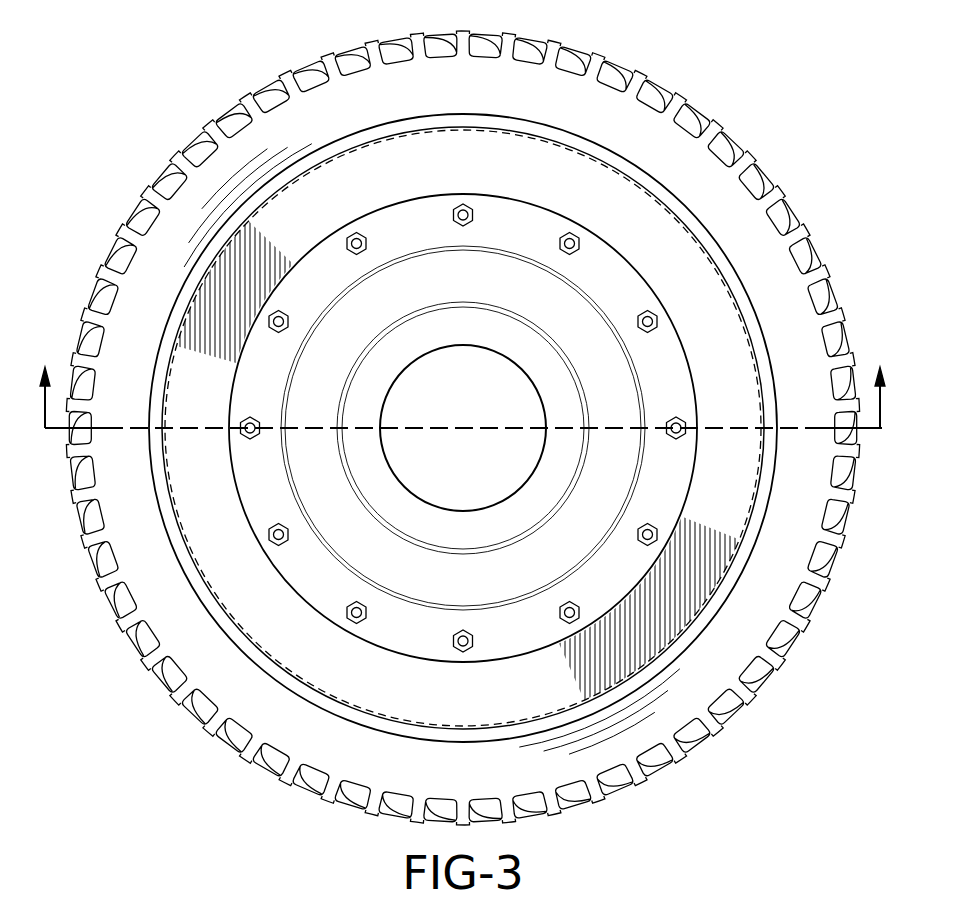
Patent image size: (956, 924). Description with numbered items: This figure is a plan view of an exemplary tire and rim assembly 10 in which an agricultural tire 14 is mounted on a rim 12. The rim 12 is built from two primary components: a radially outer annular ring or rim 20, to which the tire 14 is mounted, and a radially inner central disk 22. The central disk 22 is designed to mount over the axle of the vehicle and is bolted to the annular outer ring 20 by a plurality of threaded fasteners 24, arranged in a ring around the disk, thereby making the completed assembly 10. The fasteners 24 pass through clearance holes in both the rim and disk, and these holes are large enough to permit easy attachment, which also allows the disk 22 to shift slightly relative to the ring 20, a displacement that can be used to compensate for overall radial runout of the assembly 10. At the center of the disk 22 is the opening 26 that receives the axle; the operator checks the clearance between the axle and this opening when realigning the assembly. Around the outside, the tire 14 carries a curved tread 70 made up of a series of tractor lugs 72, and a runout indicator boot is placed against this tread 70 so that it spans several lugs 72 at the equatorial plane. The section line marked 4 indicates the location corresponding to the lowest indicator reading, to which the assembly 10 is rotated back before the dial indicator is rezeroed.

The tire and rim assembly 10 is at (461, 423).
The rim 12 is at (452, 428).
The agricultural tire 14 is at (463, 427).
The annular outer ring 20 is at (716, 248).
The central disk 22 is at (509, 234).
The threaded fasteners 24 is at (347, 612).
The center disk opening 26 is at (450, 475).
The tire tread 70 is at (722, 723).
The tractor lugs 72 is at (648, 772).
The location 4 is at (461, 384).